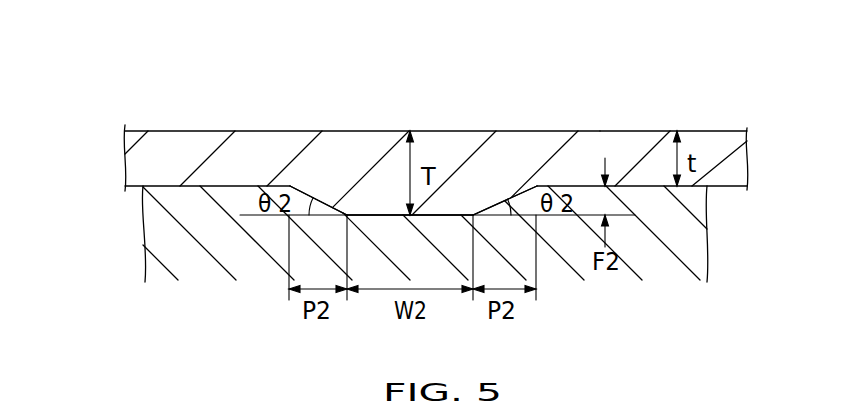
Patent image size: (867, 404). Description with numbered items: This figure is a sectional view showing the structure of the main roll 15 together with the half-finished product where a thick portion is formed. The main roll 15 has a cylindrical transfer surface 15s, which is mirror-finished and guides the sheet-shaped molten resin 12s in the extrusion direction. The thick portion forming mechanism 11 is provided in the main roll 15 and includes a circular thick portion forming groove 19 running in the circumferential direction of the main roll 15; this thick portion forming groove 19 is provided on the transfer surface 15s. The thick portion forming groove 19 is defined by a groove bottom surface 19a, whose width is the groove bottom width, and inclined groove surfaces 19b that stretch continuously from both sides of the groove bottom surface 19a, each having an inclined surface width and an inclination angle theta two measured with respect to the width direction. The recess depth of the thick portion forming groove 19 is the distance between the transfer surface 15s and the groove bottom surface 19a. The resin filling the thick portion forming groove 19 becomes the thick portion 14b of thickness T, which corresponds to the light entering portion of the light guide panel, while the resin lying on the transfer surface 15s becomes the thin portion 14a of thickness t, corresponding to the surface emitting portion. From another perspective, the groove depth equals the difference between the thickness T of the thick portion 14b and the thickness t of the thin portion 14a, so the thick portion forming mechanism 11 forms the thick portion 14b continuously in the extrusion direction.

The thick portion forming mechanism 11 is at (465, 178).
The molten resin 12s is at (130, 158).
The thin portion 14a is at (652, 131).
The thick portion 14b is at (505, 131).
The main roll 15 is at (697, 250).
The transfer surface 15s is at (210, 188).
The thick portion forming groove 19 is at (373, 205).
The groove bottom surface 19a is at (396, 215).
The inclined groove surfaces 19b is at (308, 200).